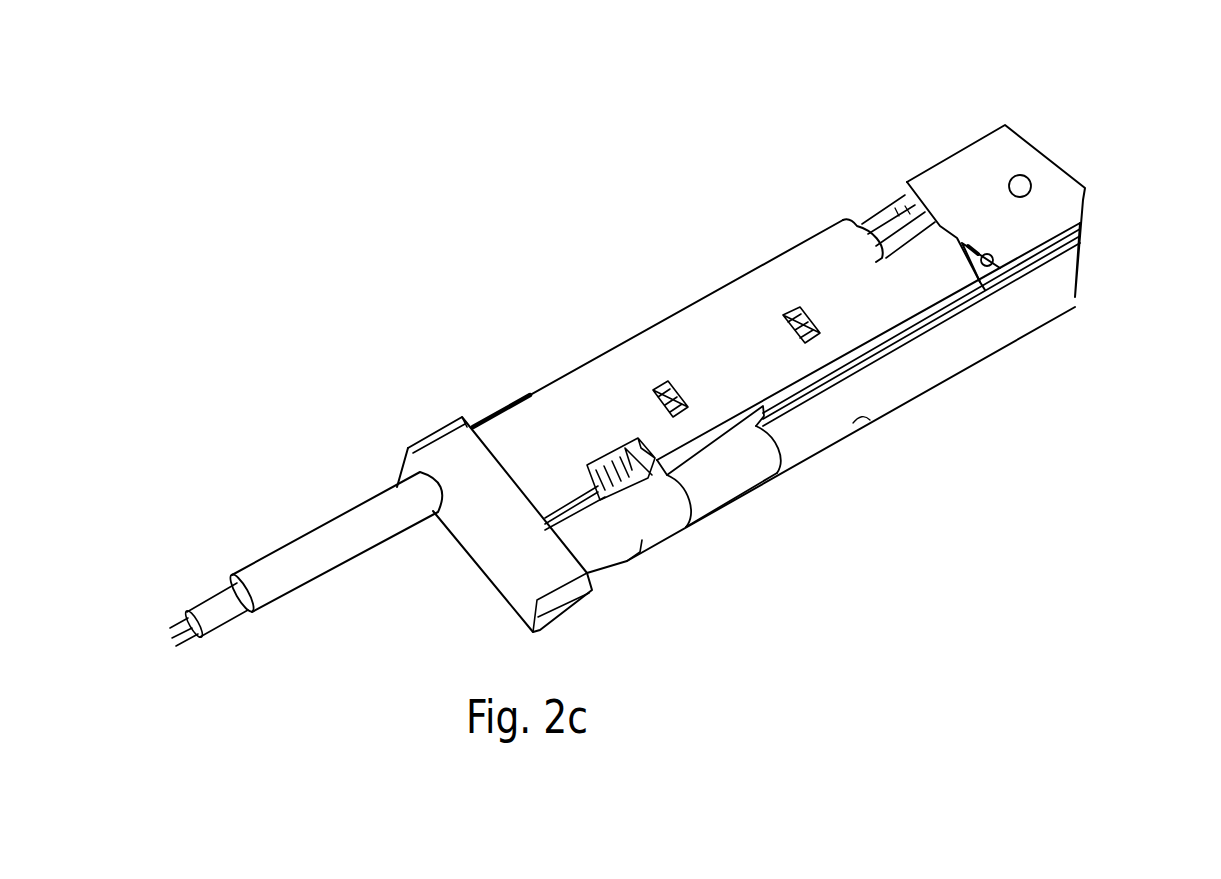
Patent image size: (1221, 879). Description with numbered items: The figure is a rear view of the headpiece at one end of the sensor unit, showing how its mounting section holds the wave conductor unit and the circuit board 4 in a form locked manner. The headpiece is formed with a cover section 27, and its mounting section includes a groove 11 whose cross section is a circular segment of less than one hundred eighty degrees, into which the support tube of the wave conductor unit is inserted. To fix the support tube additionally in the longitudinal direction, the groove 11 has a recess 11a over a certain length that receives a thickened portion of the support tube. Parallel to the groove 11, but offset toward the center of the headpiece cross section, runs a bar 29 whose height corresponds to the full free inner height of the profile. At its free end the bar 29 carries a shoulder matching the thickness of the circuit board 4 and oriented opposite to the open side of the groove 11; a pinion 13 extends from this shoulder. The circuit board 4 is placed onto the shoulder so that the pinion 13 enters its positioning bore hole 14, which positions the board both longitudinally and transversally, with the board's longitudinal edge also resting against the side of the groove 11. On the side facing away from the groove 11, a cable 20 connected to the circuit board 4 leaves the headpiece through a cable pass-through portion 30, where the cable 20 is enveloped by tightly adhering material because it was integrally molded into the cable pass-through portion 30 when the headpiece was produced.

The circuit board 4 is at (1010, 181).
The positioning bore hole 14 is at (930, 218).
The bar 29 is at (733, 410).
The cable pass-through portion 30 is at (608, 367).
The pinion 13 is at (992, 263).
The groove 11 is at (910, 380).
The cover section 27 is at (494, 524).
The cable 20 is at (306, 559).
The recess 11a is at (735, 483).